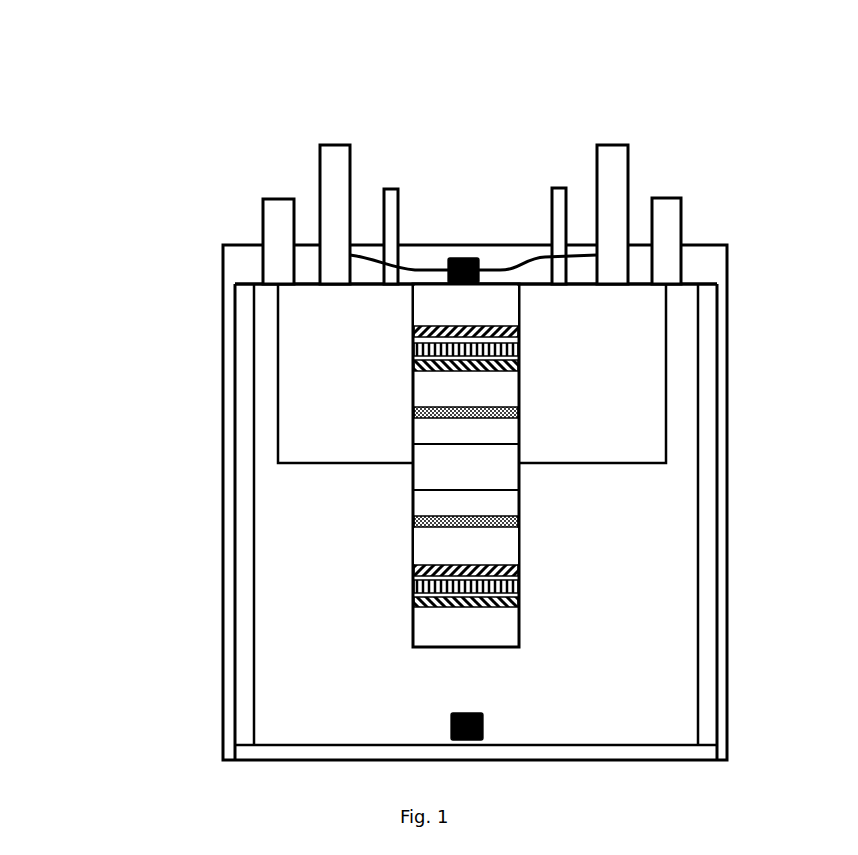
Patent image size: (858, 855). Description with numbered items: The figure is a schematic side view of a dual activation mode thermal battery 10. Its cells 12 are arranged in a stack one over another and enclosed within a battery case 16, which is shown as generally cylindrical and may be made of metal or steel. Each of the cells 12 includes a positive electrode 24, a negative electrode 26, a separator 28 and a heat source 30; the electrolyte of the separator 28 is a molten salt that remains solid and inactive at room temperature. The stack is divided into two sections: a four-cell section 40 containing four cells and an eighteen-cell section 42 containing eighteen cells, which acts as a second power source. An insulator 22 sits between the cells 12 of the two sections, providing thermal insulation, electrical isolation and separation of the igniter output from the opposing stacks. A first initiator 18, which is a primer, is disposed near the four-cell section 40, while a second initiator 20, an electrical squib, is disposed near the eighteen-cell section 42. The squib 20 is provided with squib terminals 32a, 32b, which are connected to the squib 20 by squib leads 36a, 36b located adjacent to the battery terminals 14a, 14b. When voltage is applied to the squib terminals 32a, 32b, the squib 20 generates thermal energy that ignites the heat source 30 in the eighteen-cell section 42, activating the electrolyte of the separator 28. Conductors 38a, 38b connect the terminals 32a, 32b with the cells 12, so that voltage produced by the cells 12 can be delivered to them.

The dual activation mode thermal battery 10 is at (91, 58).
The cells 12 is at (455, 478).
The battery terminal 14a is at (665, 198).
The battery terminal 14b is at (278, 199).
The battery case 16 is at (727, 558).
The first initiator 18 is at (483, 722).
The second initiator 20 is at (465, 258).
The insulator 22 is at (473, 476).
The positive electrode 24 is at (520, 362).
The negative electrode 26 is at (520, 333).
The separator 28 is at (520, 350).
The heat source 30 is at (520, 413).
The squib terminal 32a is at (612, 145).
The squib terminal 32b is at (337, 145).
The squib lead 36a is at (507, 266).
The squib lead 36b is at (414, 266).
The conductor 38a is at (600, 464).
The conductor 38b is at (313, 464).
The 4-cell section 40 is at (436, 542).
The 18-cell section 42 is at (447, 303).